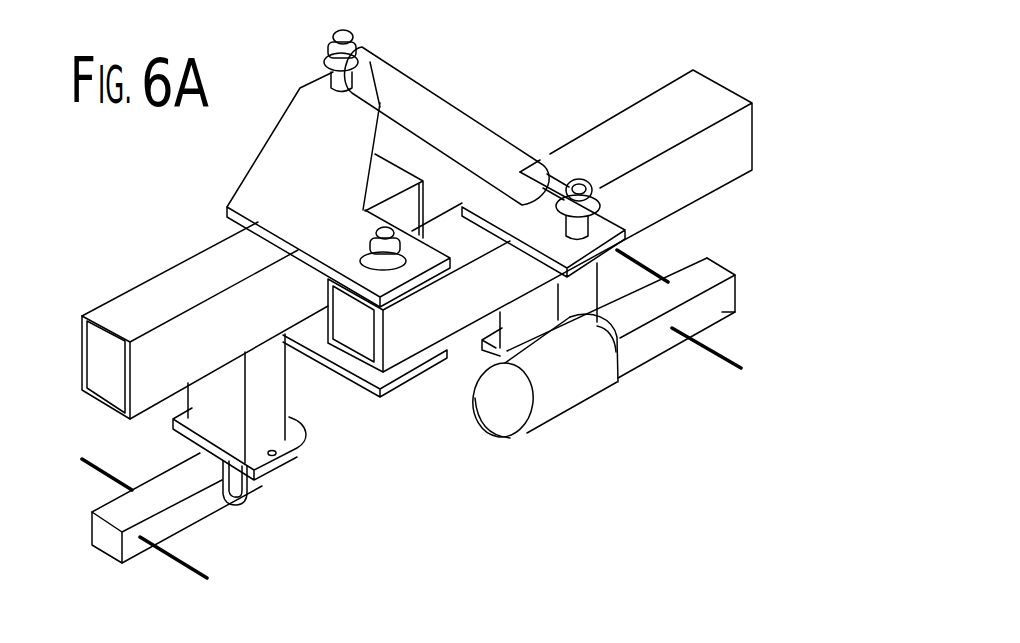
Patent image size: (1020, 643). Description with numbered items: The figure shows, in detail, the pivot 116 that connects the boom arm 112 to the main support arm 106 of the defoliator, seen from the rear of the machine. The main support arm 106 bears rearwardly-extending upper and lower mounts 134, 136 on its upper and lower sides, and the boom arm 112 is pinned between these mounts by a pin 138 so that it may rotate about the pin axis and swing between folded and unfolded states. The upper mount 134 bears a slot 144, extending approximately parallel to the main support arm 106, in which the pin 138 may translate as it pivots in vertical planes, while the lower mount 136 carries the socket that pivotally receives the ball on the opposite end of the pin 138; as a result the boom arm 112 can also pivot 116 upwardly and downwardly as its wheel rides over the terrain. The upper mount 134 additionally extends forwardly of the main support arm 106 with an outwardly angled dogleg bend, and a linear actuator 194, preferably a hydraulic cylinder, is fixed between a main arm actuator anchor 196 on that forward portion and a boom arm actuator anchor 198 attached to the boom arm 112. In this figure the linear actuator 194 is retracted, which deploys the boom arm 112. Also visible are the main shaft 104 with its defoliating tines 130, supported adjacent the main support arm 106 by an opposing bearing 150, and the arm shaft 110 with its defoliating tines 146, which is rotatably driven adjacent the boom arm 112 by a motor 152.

The main shaft 104 is at (133, 562).
The main support arm 106 is at (143, 282).
The arm shaft 110 is at (727, 314).
The boom arm 112 is at (633, 100).
The pivot 116 is at (396, 439).
The defoliating tines 130 is at (168, 555).
The upper mount 134 is at (240, 183).
The lower mount 136 is at (363, 386).
The pin 138 is at (437, 200).
The slot 144 is at (362, 257).
The defoliating tines 146 is at (717, 357).
The opposing bearing 150 is at (253, 495).
The motor 152 is at (590, 388).
The linear actuator 194 is at (413, 67).
The main arm actuator anchor 196 is at (352, 44).
The boom arm actuator anchor 198 is at (604, 204).